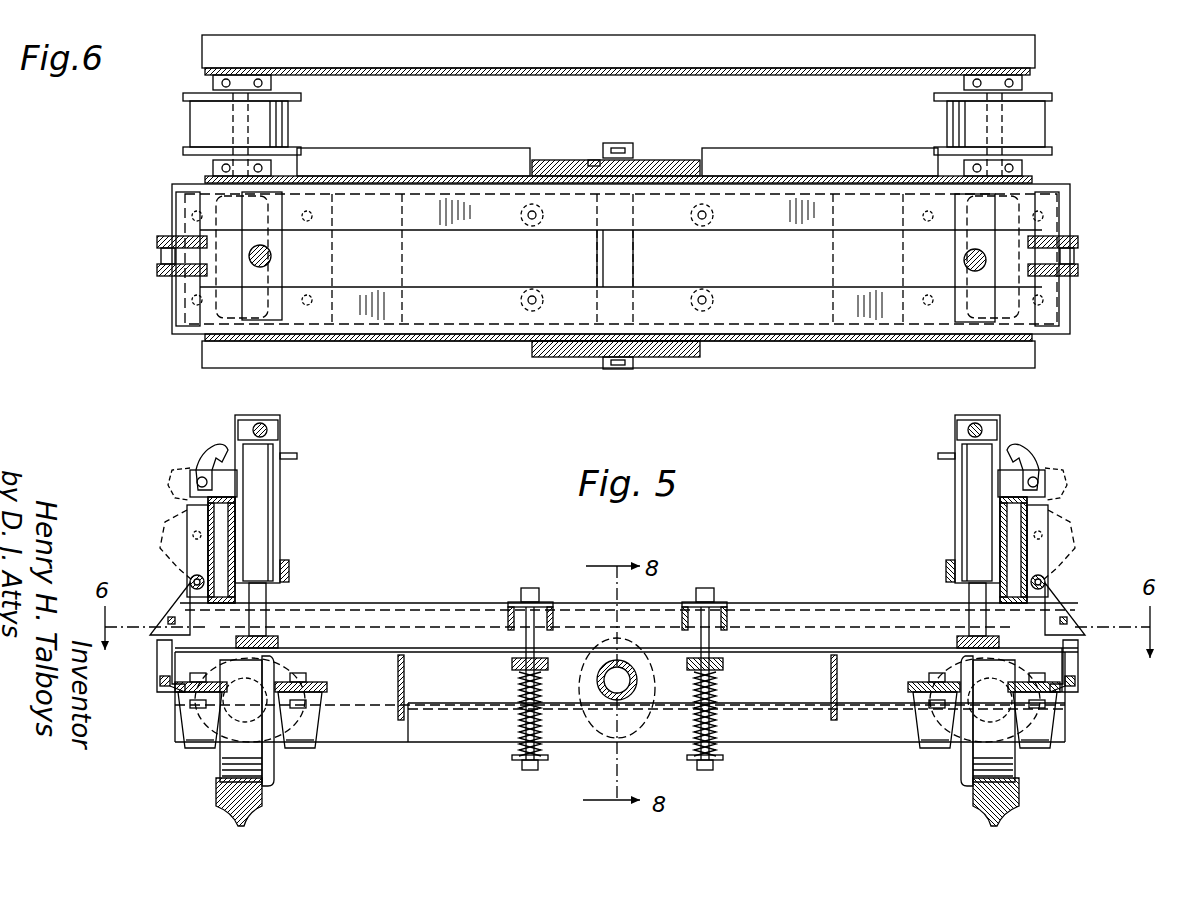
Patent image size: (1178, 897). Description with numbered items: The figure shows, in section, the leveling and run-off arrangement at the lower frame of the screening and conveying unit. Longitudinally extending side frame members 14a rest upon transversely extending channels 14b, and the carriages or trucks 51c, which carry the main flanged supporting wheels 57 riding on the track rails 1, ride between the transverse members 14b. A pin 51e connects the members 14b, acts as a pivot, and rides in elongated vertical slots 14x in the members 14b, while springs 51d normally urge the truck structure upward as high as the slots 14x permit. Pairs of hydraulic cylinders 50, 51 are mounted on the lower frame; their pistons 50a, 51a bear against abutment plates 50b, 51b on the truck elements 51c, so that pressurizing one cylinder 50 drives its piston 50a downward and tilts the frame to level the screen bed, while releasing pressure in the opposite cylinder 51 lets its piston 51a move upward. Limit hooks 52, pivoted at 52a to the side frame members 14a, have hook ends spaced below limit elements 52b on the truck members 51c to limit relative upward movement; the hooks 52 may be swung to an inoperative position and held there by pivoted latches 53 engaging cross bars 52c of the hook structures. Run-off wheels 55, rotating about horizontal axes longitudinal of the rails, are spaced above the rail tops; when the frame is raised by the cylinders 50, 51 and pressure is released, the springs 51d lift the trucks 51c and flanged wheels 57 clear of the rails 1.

In FIG. 5, the track rails 1 is at (218, 793).
In FIG. 5, the longitudinally extending members 14a is at (205, 552).
In FIG. 6, the transversely extending members 14b is at (437, 176).
In FIG. 5, the transversely extending members 14b is at (462, 620).
In FIG. 6, the elongated vertical slots 14x is at (656, 164).
In FIG. 5, the elongated vertical slots 14x is at (636, 742).
In FIG. 5, the cylinders 50 is at (262, 526).
In FIG. 6, the pistons 50a is at (286, 240).
In FIG. 5, the pistons 50a is at (272, 592).
In FIG. 6, the abutment elements or plates 50b is at (284, 283).
In FIG. 5, the abutment elements or plates 50b is at (280, 639).
In FIG. 5, the cylinders 51 is at (972, 508).
In FIG. 6, the pistons 51a is at (962, 262).
In FIG. 5, the pistons 51a is at (964, 598).
In FIG. 6, the abutment elements or plates 51b is at (958, 242).
In FIG. 5, the abutment elements or plates 51b is at (958, 640).
In FIG. 6, the carriages or trucks 51c is at (446, 298).
In FIG. 5, the carriages or trucks 51c is at (374, 632).
In FIG. 6, the springs 51d is at (540, 228).
In FIG. 5, the springs 51d is at (518, 692).
In FIG. 6, the pin 51e is at (622, 143).
In FIG. 5, the pin 51e is at (612, 700).
In FIG. 6, the limit hooks 52 is at (172, 271).
In FIG. 5, the limit hooks 52 is at (157, 655).
In FIG. 5, the pivot 52a is at (190, 582).
In FIG. 6, the limit elements 52b is at (178, 296).
In FIG. 5, the limit elements 52b is at (184, 596).
In FIG. 6, the cross bars 52c is at (160, 257).
In FIG. 5, the cross bars 52c is at (160, 684).
In FIG. 5, the pivoted latches 53 is at (208, 456).
In FIG. 6, the run-off wheels 55 is at (200, 126).
In FIG. 5, the run-off wheels 55 is at (306, 672).
In FIG. 6, the flanged supporting wheels 57 is at (232, 276).
In FIG. 5, the flanged supporting wheels 57 is at (268, 762).